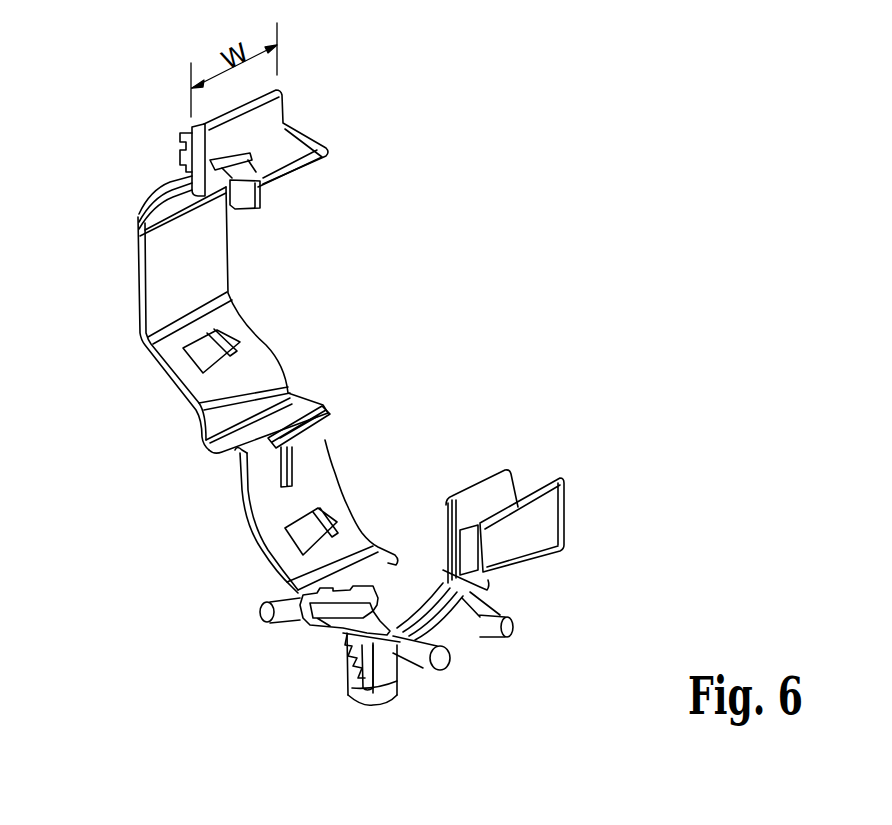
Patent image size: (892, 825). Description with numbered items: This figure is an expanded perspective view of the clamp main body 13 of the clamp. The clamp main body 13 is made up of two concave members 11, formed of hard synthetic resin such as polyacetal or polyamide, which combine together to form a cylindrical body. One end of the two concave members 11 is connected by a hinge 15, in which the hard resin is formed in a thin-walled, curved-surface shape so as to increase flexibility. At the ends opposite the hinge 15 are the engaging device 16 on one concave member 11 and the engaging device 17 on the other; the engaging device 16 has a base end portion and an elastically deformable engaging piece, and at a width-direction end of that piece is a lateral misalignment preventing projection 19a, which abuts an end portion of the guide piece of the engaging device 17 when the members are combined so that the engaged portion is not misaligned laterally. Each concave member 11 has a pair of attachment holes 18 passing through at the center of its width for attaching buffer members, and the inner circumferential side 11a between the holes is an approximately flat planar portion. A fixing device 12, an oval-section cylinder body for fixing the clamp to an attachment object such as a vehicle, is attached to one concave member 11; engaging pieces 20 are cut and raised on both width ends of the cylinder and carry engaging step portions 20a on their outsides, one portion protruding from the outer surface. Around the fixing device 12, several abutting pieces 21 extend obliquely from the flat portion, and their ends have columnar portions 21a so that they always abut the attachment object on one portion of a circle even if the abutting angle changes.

The clamp main body 13 is at (410, 48).
The concave member 11 is at (153, 272).
The inner circumferential side 11a is at (190, 258).
The fixing device 12 is at (383, 685).
The hinge 15 is at (207, 452).
The engaging device 16 is at (300, 106).
The engaging device 17 is at (537, 467).
The attachment hole 18 is at (213, 353).
The lateral misalignment preventing projection 19a is at (243, 198).
The engaging piece 20 is at (363, 668).
The engaging step portion 20a is at (337, 645).
The abutting piece 21 is at (263, 613).
The columnar portion 21a is at (510, 615).